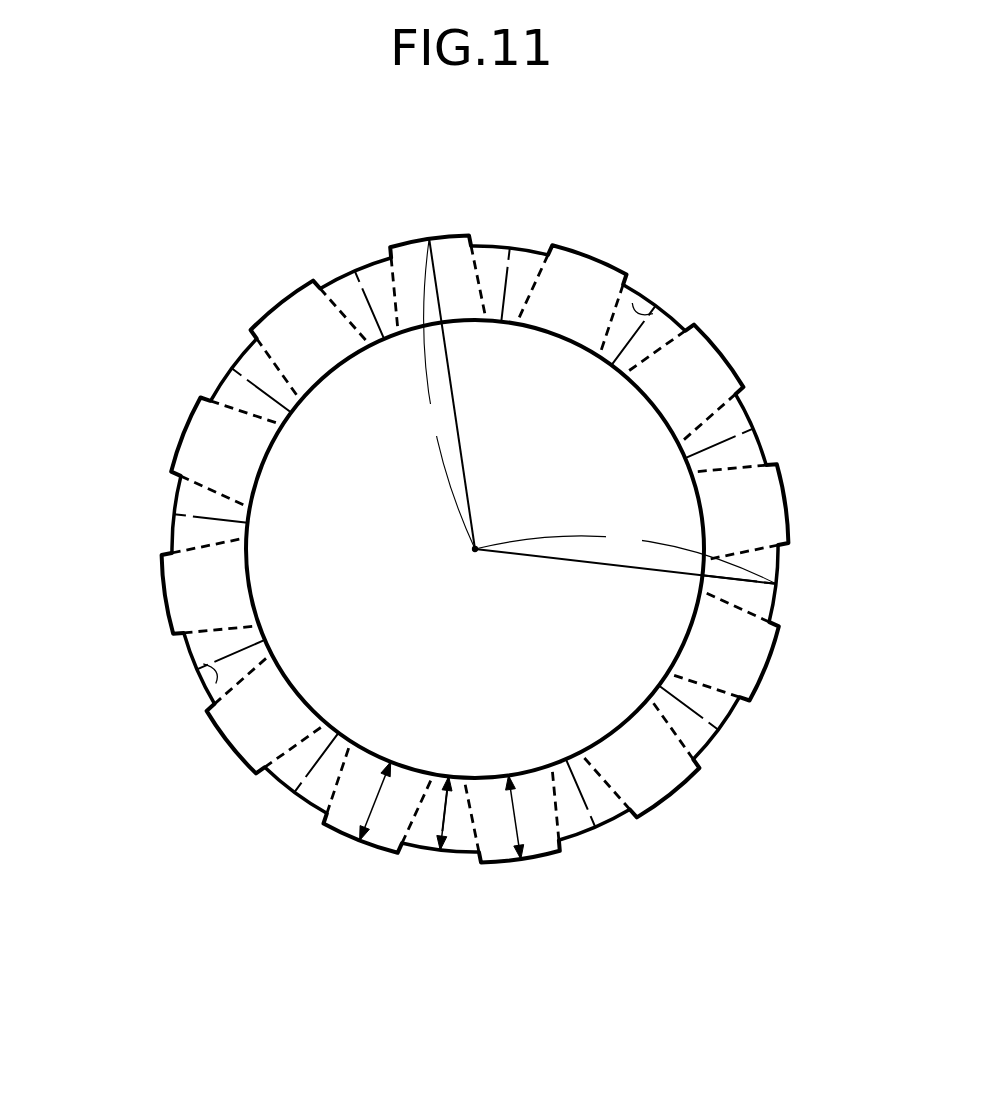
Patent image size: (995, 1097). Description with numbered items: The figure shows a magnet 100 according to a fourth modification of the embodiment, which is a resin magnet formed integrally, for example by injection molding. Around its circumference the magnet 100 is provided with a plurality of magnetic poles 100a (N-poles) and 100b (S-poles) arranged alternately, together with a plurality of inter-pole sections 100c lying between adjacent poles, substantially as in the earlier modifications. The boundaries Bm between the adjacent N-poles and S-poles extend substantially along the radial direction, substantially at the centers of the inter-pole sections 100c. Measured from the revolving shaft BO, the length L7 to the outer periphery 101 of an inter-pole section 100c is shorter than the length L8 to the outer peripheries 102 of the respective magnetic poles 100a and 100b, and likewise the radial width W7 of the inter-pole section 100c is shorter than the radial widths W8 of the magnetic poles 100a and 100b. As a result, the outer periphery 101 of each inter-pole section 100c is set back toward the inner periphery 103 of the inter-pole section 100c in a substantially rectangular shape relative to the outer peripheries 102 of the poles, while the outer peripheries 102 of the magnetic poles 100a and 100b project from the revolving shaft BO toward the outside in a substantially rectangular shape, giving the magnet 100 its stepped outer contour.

The magnet 100 is at (770, 440).
The magnetic pole (N-pole) 100a is at (278, 323).
The magnetic pole (S-pole) 100b is at (180, 437).
The inter-pole section 100c is at (237, 367).
The outer periphery of the inter-pole section 101 is at (173, 500).
The outer periphery of the magnetic pole 102 is at (160, 587).
The inner periphery of the inter-pole section 103 is at (611, 365).
The boundary of the magnetic poles Bm is at (197, 700).
The radial width of the inter-pole section W7 is at (445, 817).
The radial width of the magnetic pole W8 is at (379, 792).
The length from the revolving shaft to the outer periphery of the inter-pole section L7 is at (625, 555).
The length from the revolving shaft to the outer peripheries of the magnetic poles L8 is at (444, 394).
The revolving shaft BO is at (483, 563).